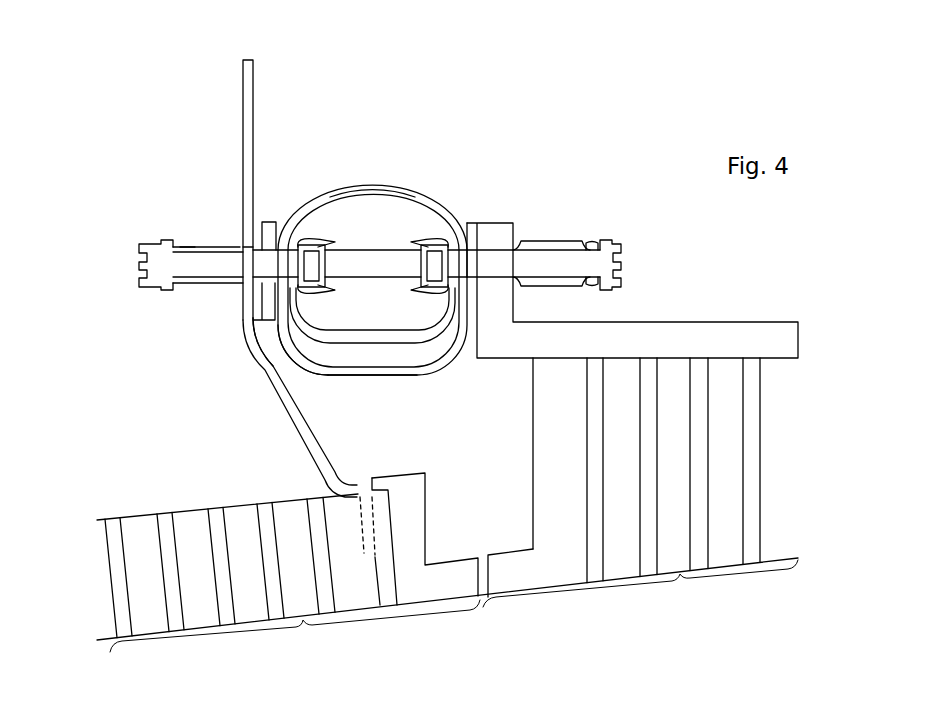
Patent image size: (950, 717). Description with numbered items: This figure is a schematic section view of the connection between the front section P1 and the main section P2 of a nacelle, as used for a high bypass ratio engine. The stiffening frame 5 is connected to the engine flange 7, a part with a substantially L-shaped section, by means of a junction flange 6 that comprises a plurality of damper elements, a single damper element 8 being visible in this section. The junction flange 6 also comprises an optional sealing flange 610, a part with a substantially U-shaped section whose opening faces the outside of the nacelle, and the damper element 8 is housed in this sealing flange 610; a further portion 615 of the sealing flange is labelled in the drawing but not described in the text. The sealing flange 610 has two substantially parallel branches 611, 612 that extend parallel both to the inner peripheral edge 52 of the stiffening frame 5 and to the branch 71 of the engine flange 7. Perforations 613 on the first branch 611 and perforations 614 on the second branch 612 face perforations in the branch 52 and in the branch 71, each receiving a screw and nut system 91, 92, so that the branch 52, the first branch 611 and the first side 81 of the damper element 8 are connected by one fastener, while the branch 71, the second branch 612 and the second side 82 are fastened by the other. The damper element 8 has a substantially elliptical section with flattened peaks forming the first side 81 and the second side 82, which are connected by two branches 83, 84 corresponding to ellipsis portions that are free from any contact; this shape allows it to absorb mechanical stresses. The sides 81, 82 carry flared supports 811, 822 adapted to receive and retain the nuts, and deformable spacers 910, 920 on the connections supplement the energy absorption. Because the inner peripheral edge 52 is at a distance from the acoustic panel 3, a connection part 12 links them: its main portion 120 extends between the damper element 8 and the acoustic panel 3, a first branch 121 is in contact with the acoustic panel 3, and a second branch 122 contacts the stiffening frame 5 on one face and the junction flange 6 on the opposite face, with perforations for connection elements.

The acoustic panel 3 is at (122, 578).
The stiffening frame 5 is at (259, 89).
The junction flange 6 is at (329, 235).
The engine flange 7 is at (784, 340).
The damper element 8 is at (367, 254).
The connection part 12 is at (329, 461).
The inner peripheral edge 52 is at (247, 297).
The branch of the engine flange 71 is at (505, 311).
The first side 81 is at (298, 231).
The second side 82 is at (452, 231).
The branch of the damper element 83 is at (388, 185).
The branch of the damper element 84 is at (420, 335).
The screw and nut system 91 is at (258, 225).
The screw and nut system 92 is at (568, 237).
The main portion 120 is at (296, 452).
The first branch 121 is at (414, 469).
The second branch 122 is at (253, 327).
The sealing flange 610 is at (388, 386).
The first branch of the sealing flange 611 is at (262, 240).
The second branch of the sealing flange 612 is at (470, 224).
The perforations 613 is at (245, 250).
The perforations 614 is at (470, 263).
The housing lower side 615 is at (340, 376).
The support 811 is at (310, 245).
The support 822 is at (421, 245).
The deformable spacer 910 is at (184, 237).
The deformable spacer 920 is at (552, 241).
The front section P1 is at (295, 638).
The main section P2 is at (640, 596).